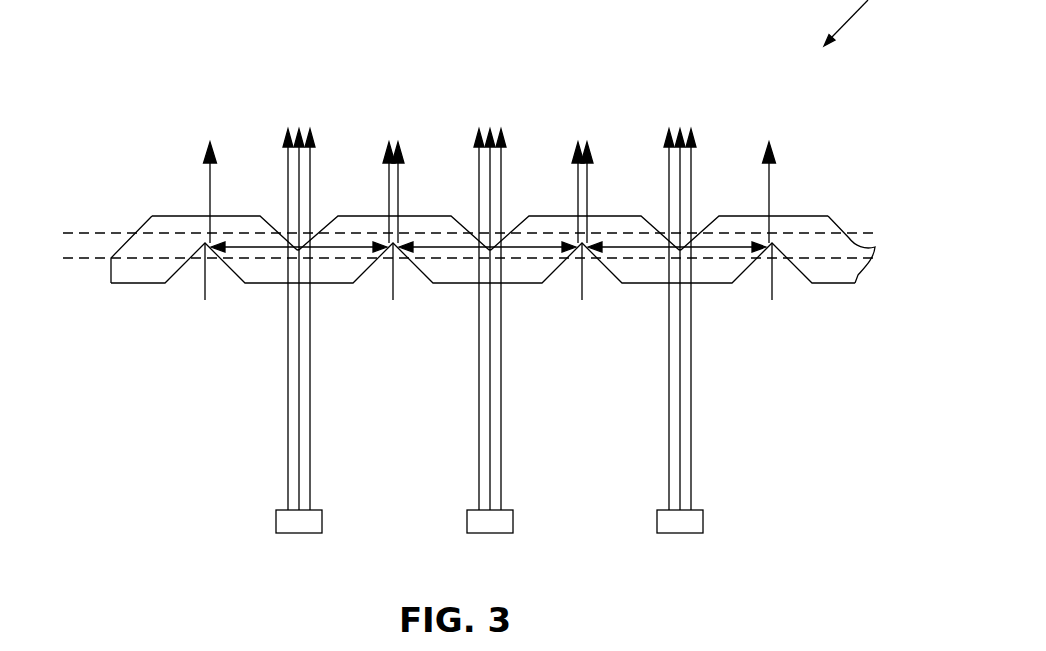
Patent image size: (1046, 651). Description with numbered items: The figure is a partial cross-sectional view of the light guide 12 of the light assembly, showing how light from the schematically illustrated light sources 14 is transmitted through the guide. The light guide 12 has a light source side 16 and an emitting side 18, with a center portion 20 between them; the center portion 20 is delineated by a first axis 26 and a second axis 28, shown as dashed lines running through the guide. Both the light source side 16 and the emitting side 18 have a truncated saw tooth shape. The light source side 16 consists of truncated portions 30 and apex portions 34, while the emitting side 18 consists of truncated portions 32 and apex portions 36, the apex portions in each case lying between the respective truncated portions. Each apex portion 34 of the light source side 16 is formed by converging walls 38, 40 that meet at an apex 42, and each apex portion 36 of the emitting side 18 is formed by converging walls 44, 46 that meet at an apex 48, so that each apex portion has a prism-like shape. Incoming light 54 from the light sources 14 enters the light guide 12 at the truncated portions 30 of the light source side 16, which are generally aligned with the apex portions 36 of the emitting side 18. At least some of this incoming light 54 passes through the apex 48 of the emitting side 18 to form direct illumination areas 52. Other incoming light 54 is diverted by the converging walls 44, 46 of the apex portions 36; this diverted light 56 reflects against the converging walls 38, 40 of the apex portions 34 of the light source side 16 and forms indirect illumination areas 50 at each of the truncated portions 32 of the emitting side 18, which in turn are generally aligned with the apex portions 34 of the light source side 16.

The light guide 12 is at (838, 272).
The light sources 14 is at (299, 533).
The light source side 16 is at (123, 283).
The emitting side 18 is at (163, 216).
The center portion 20 is at (140, 250).
The first axis 26 is at (83, 258).
The second axis 28 is at (86, 233).
The truncated portions 30 is at (252, 283).
The truncated portions 32 is at (160, 230).
The apex portions 34 is at (172, 283).
The apex portions 36 is at (261, 217).
The converging wall 38 is at (188, 268).
The converging wall 40 is at (224, 268).
The apex 42 is at (205, 283).
The converging wall 44 is at (275, 225).
The converging wall 46 is at (327, 226).
The apex 48 is at (313, 236).
The indirect illumination areas 50 is at (210, 172).
The direct illumination areas 52 is at (288, 147).
The incoming light 54 is at (288, 495).
The diverted light 56 is at (238, 230).